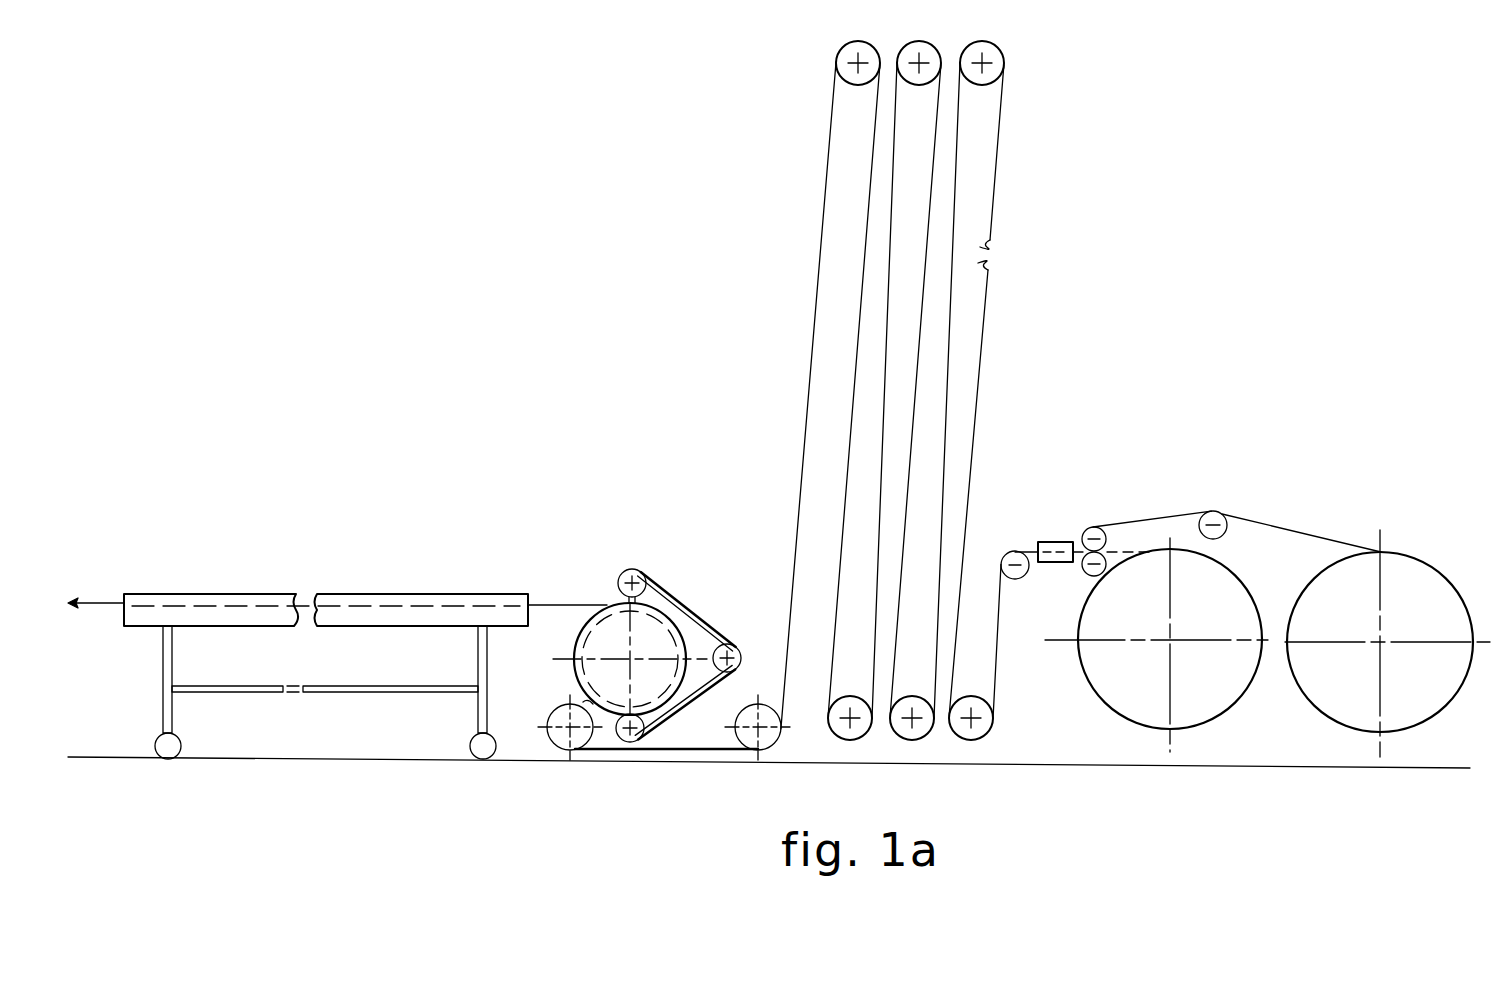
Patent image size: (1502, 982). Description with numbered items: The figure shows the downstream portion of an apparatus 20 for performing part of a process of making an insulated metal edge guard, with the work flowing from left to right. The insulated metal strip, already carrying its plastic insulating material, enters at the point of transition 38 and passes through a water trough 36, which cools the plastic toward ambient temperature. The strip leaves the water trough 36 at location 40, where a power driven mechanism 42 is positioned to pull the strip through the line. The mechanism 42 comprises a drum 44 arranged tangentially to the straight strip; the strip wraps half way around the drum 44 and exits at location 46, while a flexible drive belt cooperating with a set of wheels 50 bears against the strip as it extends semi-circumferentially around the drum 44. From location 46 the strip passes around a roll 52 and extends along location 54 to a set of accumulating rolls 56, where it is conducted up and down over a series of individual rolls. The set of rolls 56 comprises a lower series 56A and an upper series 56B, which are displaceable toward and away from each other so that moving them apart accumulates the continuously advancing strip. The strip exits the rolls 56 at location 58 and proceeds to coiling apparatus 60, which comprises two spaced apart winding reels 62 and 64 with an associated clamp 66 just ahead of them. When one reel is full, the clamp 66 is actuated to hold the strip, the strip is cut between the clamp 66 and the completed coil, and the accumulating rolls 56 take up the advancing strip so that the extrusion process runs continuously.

The apparatus 20 is at (426, 233).
The water trough 36 is at (343, 594).
The point of transition 38 is at (103, 602).
The location where strip leaves water trough 40 is at (548, 606).
The power driven mechanism 42 is at (697, 593).
The drum 44 is at (607, 604).
The exit location 46 is at (588, 705).
The wheels 50 is at (634, 570).
The roll 52 is at (547, 740).
The location 54 is at (672, 756).
The set of accumulating rolls 56 is at (1013, 375).
The lower series of rolls 56A is at (988, 740).
The upper series of rolls 56B is at (1038, 63).
The exit location from accumulating rolls 58 is at (997, 592).
The coiling apparatus 60 is at (1180, 505).
The winding reel 62 is at (1137, 722).
The winding reel 64 is at (1327, 717).
The clamp 66 is at (1057, 541).